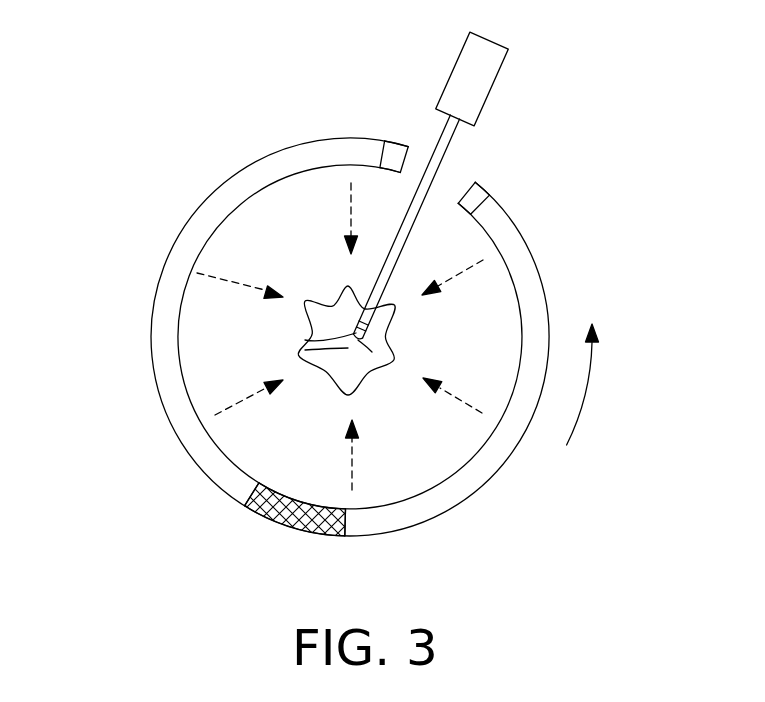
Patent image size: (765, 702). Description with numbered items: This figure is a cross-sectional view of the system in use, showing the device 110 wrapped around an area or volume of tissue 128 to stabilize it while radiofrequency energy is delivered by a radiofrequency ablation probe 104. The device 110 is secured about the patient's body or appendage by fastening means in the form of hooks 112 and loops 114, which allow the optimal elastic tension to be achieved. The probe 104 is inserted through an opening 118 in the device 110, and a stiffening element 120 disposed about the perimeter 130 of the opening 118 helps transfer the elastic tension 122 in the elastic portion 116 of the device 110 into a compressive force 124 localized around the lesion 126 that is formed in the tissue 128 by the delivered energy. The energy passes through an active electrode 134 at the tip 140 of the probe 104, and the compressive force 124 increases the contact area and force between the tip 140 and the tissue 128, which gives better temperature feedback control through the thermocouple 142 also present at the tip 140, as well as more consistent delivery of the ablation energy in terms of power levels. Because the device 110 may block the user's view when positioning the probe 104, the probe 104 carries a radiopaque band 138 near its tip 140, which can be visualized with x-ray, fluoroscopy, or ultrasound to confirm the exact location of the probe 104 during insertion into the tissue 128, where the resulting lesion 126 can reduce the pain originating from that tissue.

The radiofrequency ablation probe 104 is at (486, 185).
The device 110 is at (344, 332).
The hooks 112 is at (290, 497).
The loops 114 is at (298, 528).
The elastic portion 116 is at (162, 341).
The opening 118 is at (450, 180).
The stiffening element 120 is at (390, 140).
The elastic tension 122 is at (592, 388).
The compressive force 124 is at (197, 273).
The lesion 126 is at (322, 298).
The area or volume of tissue 128 is at (250, 243).
The perimeter 130 is at (384, 141).
The active electrode 134 is at (372, 352).
The radiopaque band 138 is at (378, 324).
The tip 140 is at (305, 350).
The thermocouple 142 is at (305, 340).